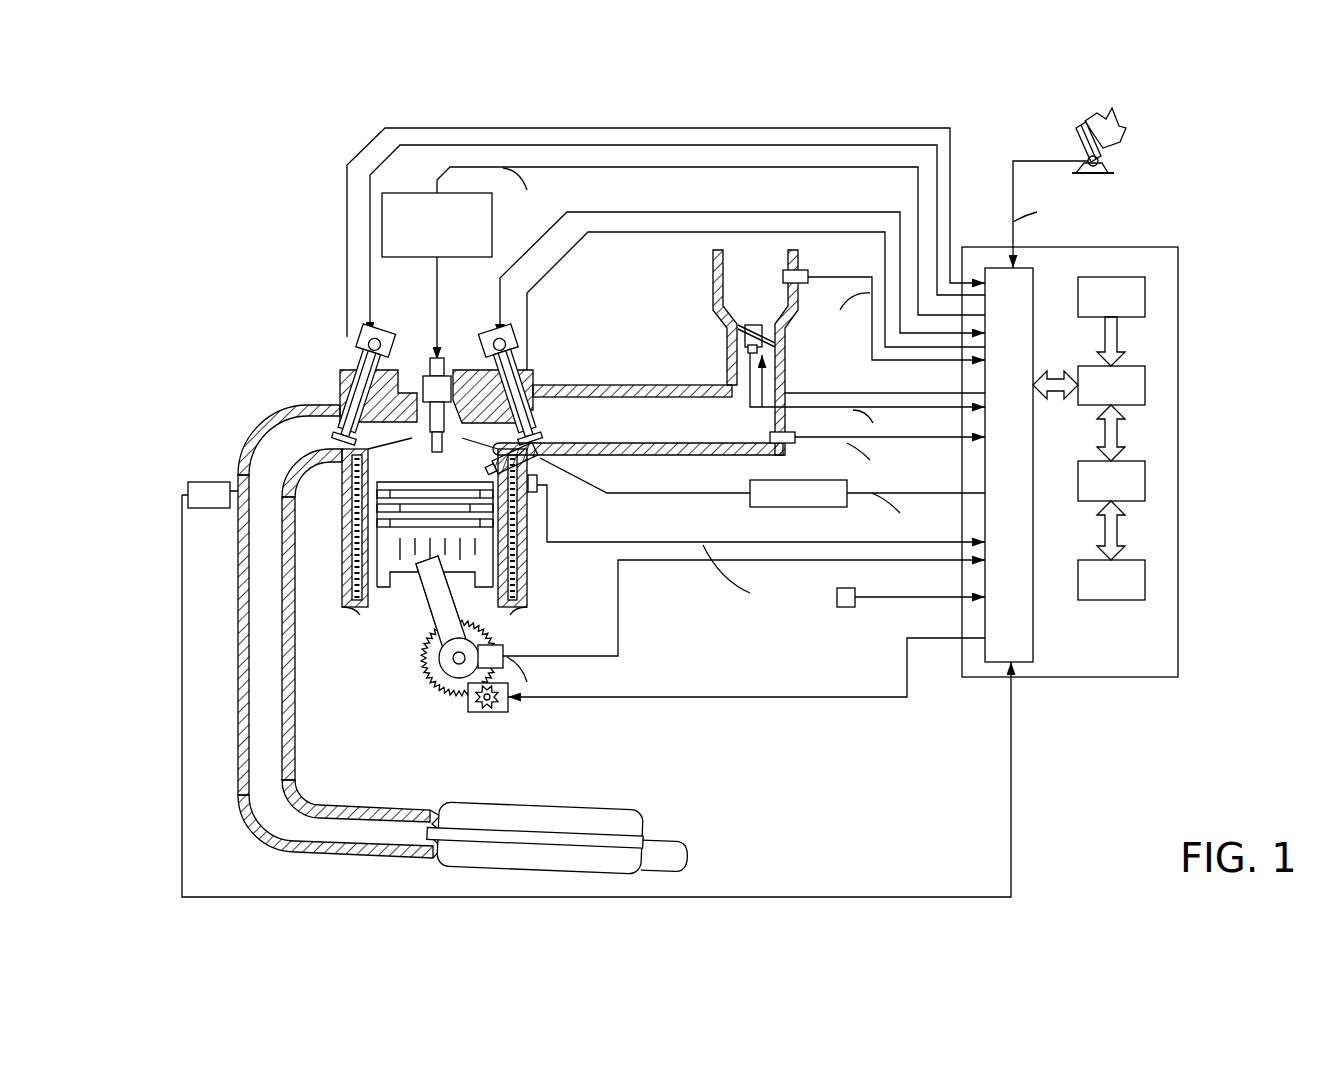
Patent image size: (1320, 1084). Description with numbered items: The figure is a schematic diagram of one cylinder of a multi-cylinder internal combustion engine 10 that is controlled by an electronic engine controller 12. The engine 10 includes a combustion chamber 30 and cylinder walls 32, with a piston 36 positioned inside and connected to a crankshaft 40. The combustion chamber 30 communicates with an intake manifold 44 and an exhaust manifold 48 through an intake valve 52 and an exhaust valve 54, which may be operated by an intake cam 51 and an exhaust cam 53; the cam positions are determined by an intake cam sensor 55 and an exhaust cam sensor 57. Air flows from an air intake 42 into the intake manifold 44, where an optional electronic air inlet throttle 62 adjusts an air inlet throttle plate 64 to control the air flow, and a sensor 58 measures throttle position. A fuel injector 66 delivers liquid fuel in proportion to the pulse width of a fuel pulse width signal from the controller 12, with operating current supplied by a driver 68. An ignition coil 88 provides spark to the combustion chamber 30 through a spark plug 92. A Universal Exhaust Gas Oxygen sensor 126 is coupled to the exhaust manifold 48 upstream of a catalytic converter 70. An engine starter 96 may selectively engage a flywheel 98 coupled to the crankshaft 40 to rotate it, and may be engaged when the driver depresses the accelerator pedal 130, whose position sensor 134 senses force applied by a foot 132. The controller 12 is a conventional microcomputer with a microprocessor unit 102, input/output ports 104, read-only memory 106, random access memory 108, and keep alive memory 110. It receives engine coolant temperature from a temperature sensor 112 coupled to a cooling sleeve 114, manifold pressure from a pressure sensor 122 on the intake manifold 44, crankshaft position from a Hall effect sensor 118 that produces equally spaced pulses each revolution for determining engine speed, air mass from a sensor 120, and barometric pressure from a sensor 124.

The internal combustion engine 10 is at (272, 320).
The electronic engine controller 12 is at (1178, 247).
The combustion chamber 30 is at (433, 463).
The cylinder walls 32 is at (383, 605).
The piston 36 is at (420, 560).
The crankshaft 40 is at (450, 655).
The air intake 42 is at (741, 304).
The intake manifold 44 is at (681, 433).
The exhaust manifold 48 is at (298, 443).
The intake cam 51 is at (492, 338).
The intake valve 52 is at (490, 432).
The exhaust cam 53 is at (381, 338).
The exhaust valve 54 is at (352, 405).
The intake cam sensor 55 is at (507, 350).
The exhaust cam sensor 57 is at (360, 352).
The throttle position sensor 58 is at (733, 350).
The electronic air inlet throttle 62 is at (762, 330).
The air inlet throttle plate 64 is at (740, 331).
The fuel injector 66 is at (543, 463).
The driver 68 is at (778, 508).
The catalytic converter 70 is at (447, 808).
The ignition coil 88 is at (397, 193).
The spark plug 92 is at (440, 385).
The engine starter 96 is at (500, 712).
The flywheel 98 is at (453, 690).
The microprocessor unit 102 is at (1145, 387).
The input/output ports 104 is at (1036, 270).
The read-only memory 106 is at (1145, 292).
The random access memory 108 is at (1145, 484).
The keep alive memory 110 is at (1145, 582).
The temperature sensor 112 is at (540, 493).
The cooling sleeve 114 is at (512, 560).
The Hall effect sensor 118 is at (501, 648).
The air mass sensor 120 is at (800, 270).
The pressure sensor 122 is at (790, 447).
The barometric pressure sensor 124 is at (848, 608).
The Universal Exhaust Gas Oxygen sensor 126 is at (190, 490).
The accelerator pedal 130 is at (1078, 140).
The foot 132 is at (1120, 125).
The position sensor 134 is at (1110, 163).